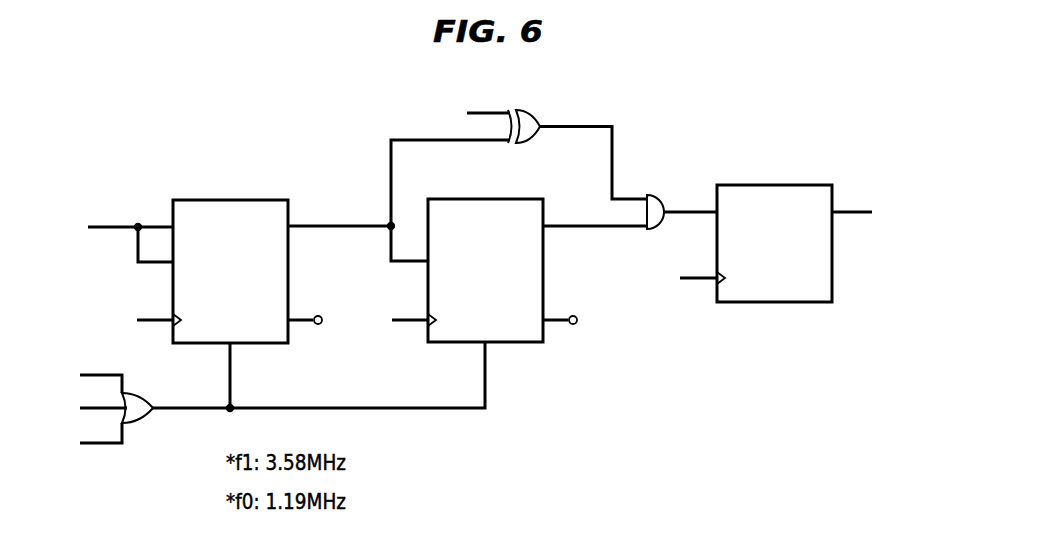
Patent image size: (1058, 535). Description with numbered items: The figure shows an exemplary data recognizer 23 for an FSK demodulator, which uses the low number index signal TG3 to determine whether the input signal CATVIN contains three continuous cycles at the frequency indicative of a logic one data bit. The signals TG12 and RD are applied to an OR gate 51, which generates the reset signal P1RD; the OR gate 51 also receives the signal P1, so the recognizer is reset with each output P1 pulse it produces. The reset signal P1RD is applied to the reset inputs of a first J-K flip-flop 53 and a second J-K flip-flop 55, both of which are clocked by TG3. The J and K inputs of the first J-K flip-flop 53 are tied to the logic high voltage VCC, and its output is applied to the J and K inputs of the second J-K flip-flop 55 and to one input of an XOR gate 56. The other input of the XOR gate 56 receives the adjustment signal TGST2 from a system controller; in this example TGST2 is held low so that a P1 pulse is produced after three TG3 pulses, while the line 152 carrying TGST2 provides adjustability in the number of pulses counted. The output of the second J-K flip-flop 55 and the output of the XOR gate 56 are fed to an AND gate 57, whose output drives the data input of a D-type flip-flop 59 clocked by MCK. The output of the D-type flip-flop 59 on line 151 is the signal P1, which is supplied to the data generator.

The data recognizer 23 is at (191, 158).
The OR gate 51 is at (138, 420).
The first J-K flip-flop 53 is at (247, 200).
The second J-K flip-flop 55 is at (543, 270).
The XOR gate 56 is at (523, 105).
The AND gate 57 is at (658, 197).
The D-type flip-flop 59 is at (771, 185).
The line 151 is at (890, 195).
The input signal TGST2 152 is at (443, 100).